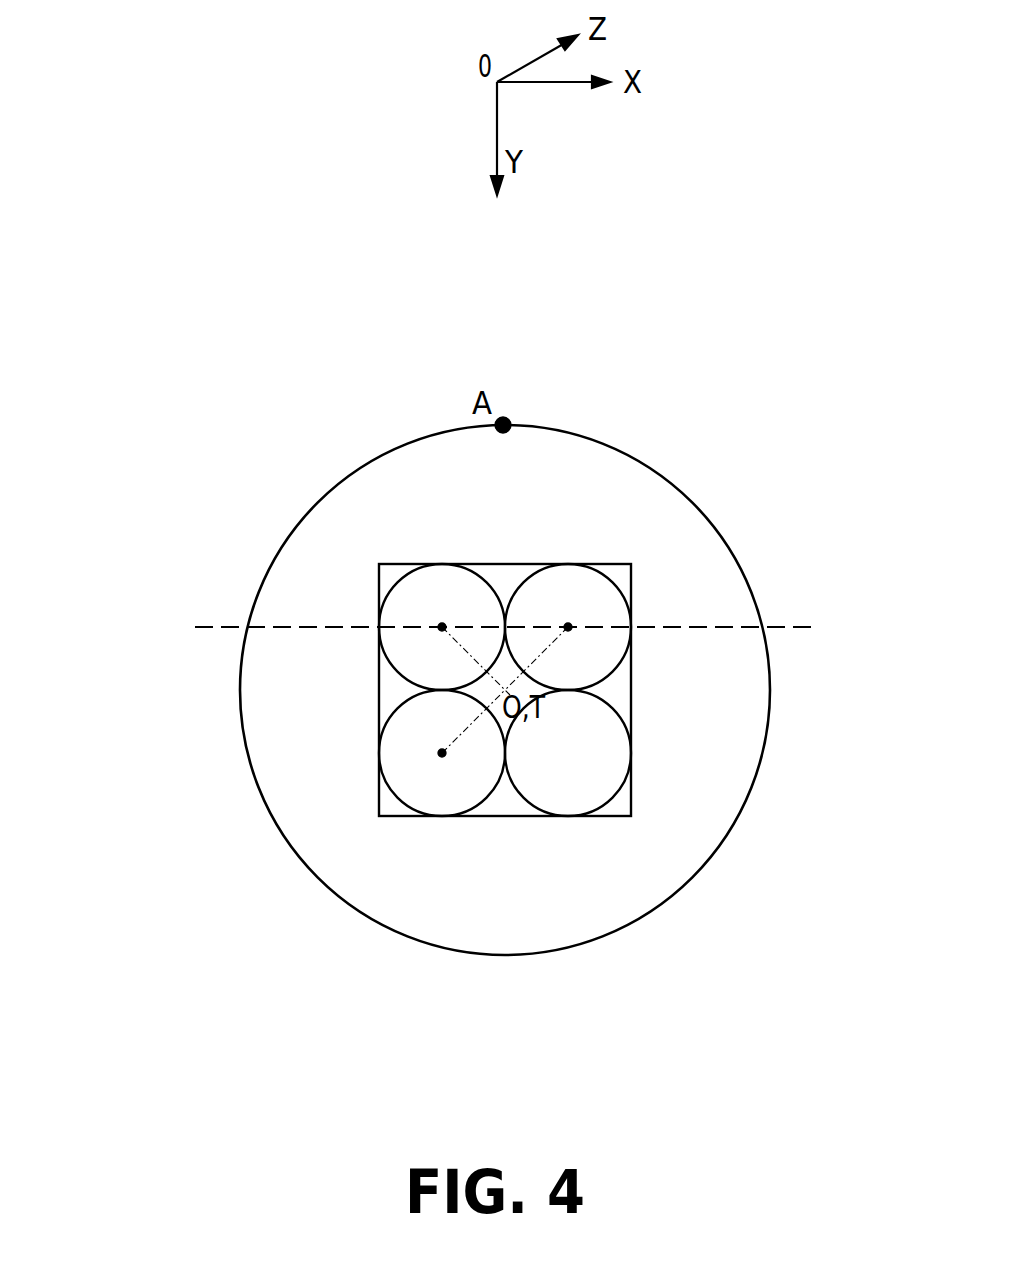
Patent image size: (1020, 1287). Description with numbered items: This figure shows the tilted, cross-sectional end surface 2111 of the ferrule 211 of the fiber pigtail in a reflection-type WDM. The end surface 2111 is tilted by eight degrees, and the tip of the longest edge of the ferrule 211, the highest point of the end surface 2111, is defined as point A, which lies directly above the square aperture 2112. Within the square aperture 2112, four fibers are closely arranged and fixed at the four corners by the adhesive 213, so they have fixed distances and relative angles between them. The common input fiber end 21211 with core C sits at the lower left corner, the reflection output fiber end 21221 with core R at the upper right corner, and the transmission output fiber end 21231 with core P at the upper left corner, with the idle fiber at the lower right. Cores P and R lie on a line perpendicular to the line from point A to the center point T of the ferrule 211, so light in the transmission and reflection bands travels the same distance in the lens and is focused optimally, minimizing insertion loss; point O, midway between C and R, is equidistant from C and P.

The ferrule 211 is at (653, 910).
The tilted cross-sectional end surface 2111 is at (372, 523).
The square aperture 2112 is at (510, 563).
The adhesive 213 is at (378, 815).
The common input fiber end 21211 is at (465, 783).
The reflection output fiber end 21221 is at (577, 590).
The transmission output fiber end 21231 is at (415, 657).